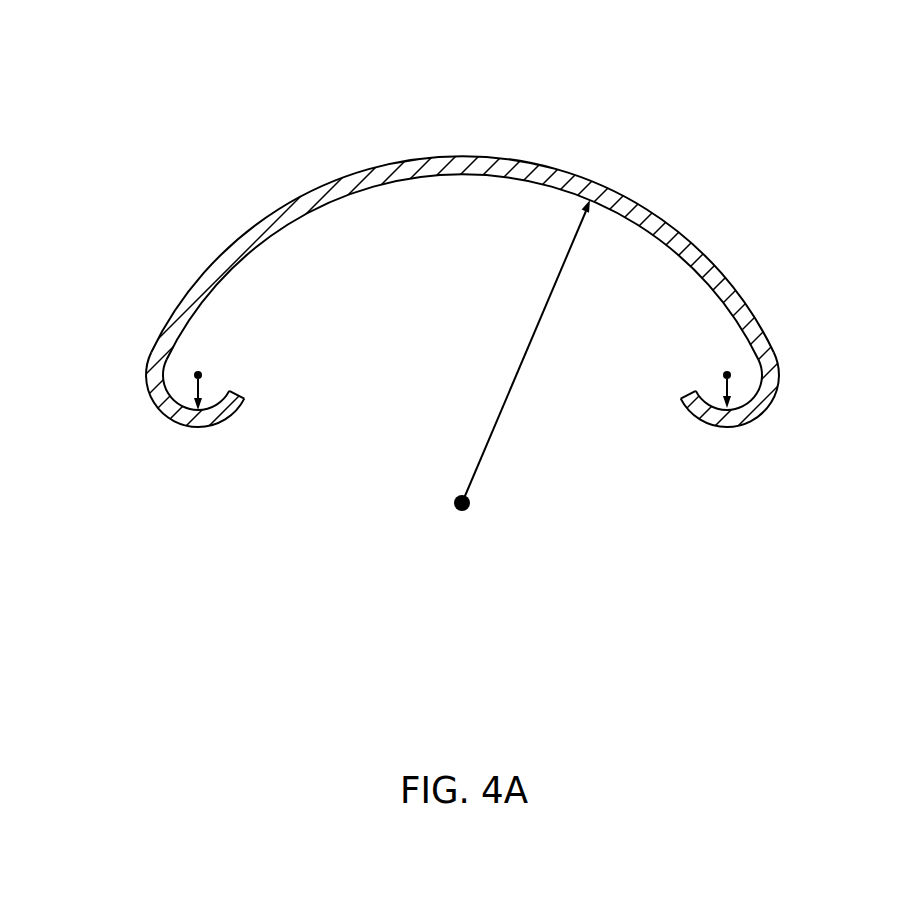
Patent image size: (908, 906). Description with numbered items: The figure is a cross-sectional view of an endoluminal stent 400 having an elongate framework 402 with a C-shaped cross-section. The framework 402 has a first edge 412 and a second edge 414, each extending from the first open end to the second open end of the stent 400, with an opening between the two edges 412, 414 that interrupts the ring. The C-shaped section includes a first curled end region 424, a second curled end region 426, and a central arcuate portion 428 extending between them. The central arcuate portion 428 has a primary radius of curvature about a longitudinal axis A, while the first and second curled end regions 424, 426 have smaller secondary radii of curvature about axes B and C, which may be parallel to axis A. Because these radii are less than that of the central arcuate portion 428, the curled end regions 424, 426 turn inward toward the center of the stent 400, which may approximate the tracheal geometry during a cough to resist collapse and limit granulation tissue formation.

The endoluminal stent 400 is at (552, 56).
The elongate framework 402 is at (641, 211).
The central arcuate portion 428 is at (430, 146).
The first edge 412 is at (246, 393).
The second edge 414 is at (688, 391).
The first curled end region 424 is at (177, 422).
The second curled end region 426 is at (758, 417).